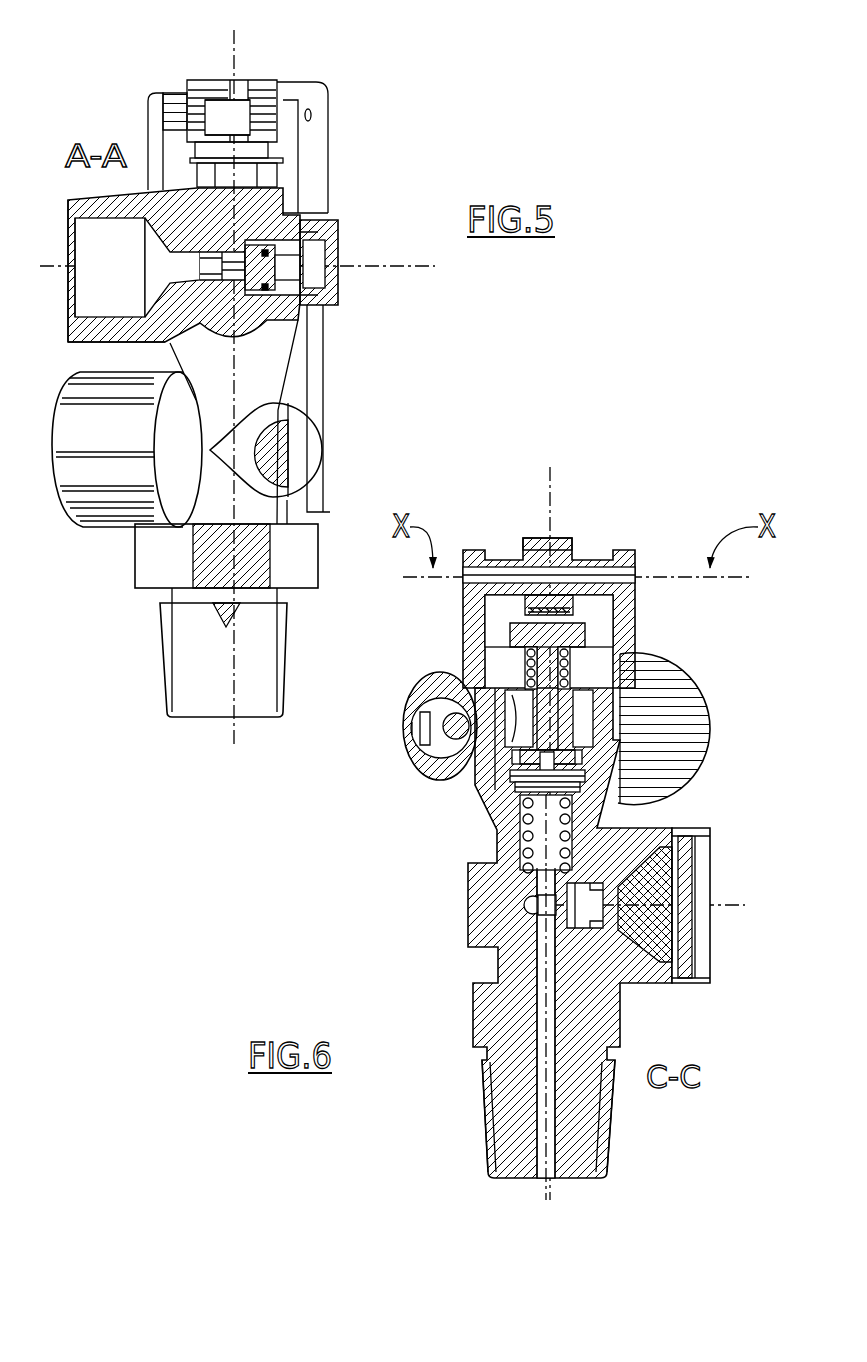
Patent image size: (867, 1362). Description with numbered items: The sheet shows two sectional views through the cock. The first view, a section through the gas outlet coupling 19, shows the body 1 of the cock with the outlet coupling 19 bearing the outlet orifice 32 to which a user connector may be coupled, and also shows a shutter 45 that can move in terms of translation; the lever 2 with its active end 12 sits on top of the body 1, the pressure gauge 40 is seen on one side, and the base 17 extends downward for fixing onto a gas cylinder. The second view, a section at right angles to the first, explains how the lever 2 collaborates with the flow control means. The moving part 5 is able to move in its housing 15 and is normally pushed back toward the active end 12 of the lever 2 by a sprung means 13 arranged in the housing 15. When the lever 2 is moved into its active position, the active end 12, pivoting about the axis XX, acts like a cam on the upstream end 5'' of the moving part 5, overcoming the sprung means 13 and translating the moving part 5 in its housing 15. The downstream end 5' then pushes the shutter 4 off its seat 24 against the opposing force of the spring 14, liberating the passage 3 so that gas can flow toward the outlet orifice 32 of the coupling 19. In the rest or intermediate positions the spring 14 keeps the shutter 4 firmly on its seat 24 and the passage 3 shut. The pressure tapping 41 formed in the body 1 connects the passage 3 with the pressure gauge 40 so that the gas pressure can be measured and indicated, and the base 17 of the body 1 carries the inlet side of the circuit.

In FIG. 5, the body 1 is at (253, 362).
In FIG. 6, the body 1 is at (518, 923).
In FIG. 5, the lever 2 is at (272, 82).
In FIG. 6, the lever 2 is at (550, 533).
In FIG. 6, the internal passage 3 is at (550, 1010).
In FIG. 6, the shutter 4 is at (570, 785).
In FIG. 6, the moving part 5 is at (502, 685).
In FIG. 6, the downstream end of the moving part 5' is at (631, 769).
In FIG. 6, the upstream end of the moving part 5'' is at (632, 601).
In FIG. 5, the active end of the lever 12 is at (217, 130).
In FIG. 6, the active end of the lever 12 is at (522, 598).
In FIG. 6, the sprung means 13 is at (577, 660).
In FIG. 6, the spring 14 is at (517, 833).
In FIG. 6, the housing 15 is at (527, 677).
In FIG. 5, the base 17 is at (157, 648).
In FIG. 6, the base 17 is at (480, 1122).
In FIG. 5, the outlet coupling 19 is at (105, 333).
In FIG. 6, the outlet coupling 19 is at (700, 713).
In FIG. 6, the seat 24 is at (520, 793).
In FIG. 5, the outlet orifice 32 is at (122, 242).
In FIG. 5, the pressure gauge 40 is at (112, 473).
In FIG. 6, the pressure gauge 40 is at (712, 873).
In FIG. 6, the pressure tapping 41 is at (540, 887).
In FIG. 5, the shutter 45 is at (243, 257).